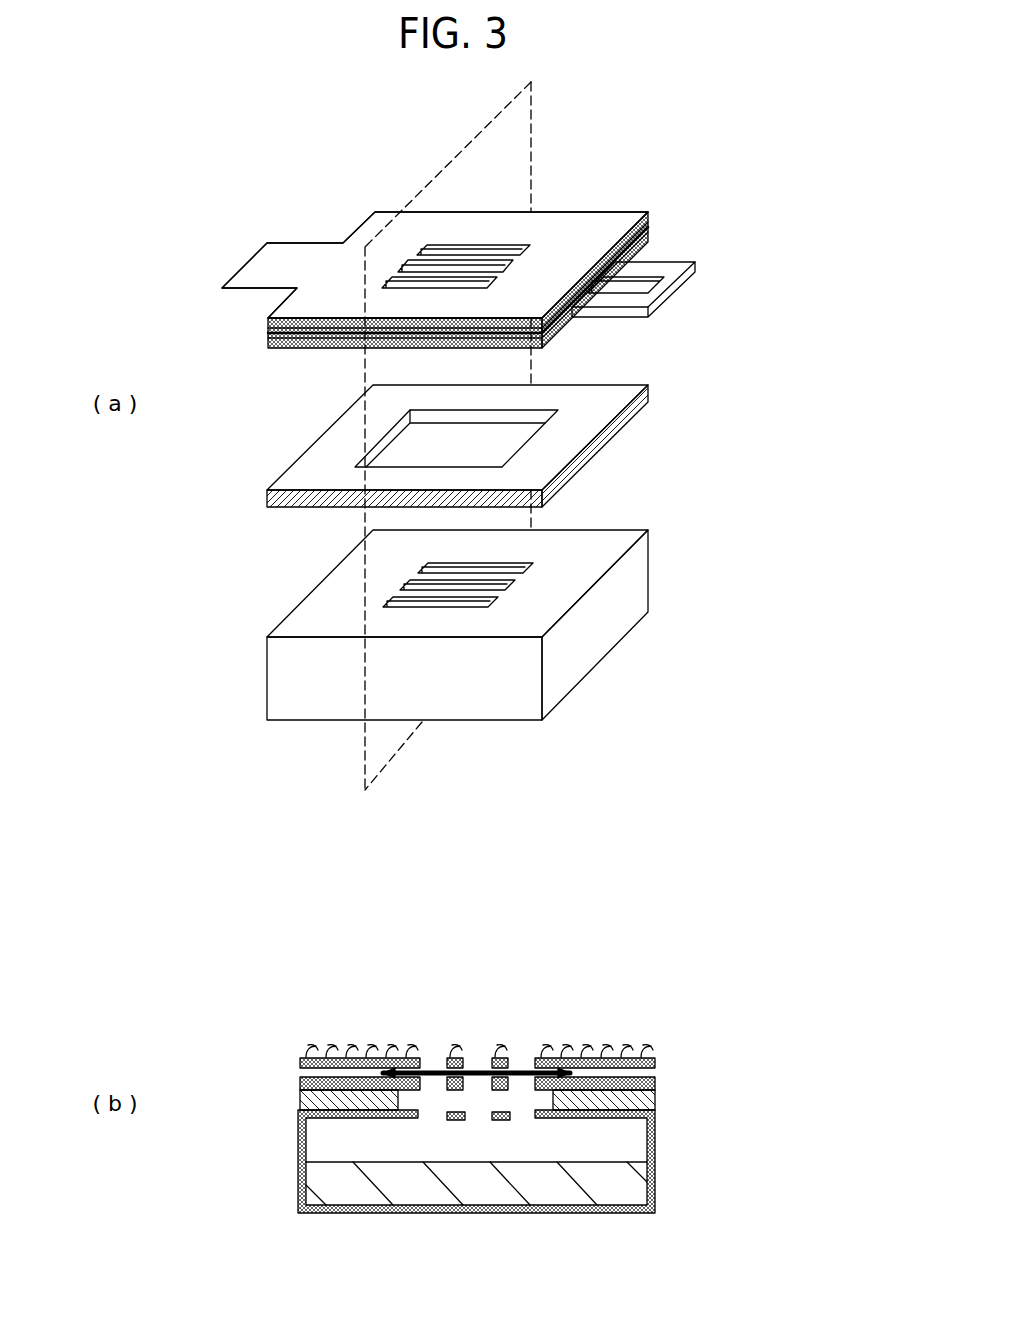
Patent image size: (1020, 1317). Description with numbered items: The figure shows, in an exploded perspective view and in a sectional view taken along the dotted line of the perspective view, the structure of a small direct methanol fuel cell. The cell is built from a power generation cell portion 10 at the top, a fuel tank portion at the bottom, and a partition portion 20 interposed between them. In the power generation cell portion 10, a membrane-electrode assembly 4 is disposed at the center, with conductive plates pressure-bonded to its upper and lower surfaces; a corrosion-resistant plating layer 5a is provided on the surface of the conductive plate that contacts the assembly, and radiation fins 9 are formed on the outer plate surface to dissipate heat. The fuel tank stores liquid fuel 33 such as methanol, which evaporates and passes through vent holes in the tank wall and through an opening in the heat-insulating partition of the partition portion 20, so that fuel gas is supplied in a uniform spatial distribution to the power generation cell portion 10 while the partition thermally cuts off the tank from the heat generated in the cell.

The membrane-electrode assembly 4 is at (525, 1066).
The plating layer 5a is at (640, 283).
The radiation fins 9 is at (420, 1041).
The power generation cell portion 10 is at (665, 222).
The partition portion 20 is at (535, 446).
The liquid fuel 33 is at (647, 1170).